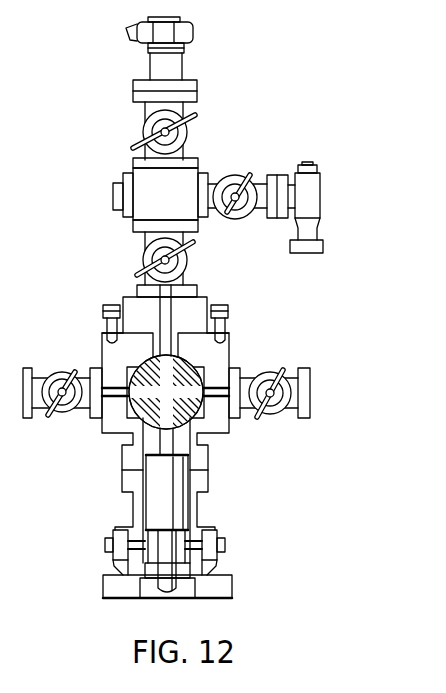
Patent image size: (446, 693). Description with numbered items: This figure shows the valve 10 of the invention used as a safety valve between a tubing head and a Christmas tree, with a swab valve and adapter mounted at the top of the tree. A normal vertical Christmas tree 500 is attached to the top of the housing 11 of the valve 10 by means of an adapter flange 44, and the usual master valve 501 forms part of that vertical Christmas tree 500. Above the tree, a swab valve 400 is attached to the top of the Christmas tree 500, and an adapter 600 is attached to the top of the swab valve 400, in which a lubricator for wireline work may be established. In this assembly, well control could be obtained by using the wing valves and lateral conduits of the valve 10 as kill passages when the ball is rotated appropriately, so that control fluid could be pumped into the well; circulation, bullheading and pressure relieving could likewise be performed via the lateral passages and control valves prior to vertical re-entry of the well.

The valve 10 is at (90, 357).
The housing 11 is at (217, 360).
The adapter flange 44 is at (128, 347).
The swab valve 400 is at (182, 138).
The vertical Christmas tree 500 is at (103, 255).
The master valve 501 is at (182, 268).
The adapter 600 is at (196, 52).